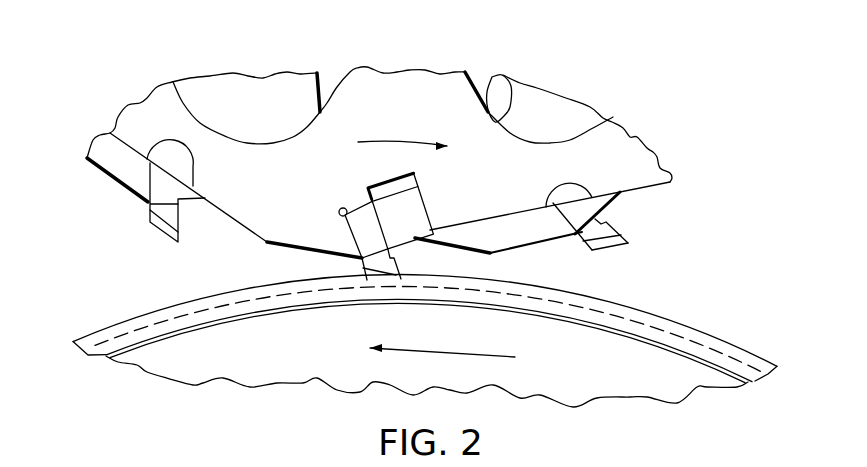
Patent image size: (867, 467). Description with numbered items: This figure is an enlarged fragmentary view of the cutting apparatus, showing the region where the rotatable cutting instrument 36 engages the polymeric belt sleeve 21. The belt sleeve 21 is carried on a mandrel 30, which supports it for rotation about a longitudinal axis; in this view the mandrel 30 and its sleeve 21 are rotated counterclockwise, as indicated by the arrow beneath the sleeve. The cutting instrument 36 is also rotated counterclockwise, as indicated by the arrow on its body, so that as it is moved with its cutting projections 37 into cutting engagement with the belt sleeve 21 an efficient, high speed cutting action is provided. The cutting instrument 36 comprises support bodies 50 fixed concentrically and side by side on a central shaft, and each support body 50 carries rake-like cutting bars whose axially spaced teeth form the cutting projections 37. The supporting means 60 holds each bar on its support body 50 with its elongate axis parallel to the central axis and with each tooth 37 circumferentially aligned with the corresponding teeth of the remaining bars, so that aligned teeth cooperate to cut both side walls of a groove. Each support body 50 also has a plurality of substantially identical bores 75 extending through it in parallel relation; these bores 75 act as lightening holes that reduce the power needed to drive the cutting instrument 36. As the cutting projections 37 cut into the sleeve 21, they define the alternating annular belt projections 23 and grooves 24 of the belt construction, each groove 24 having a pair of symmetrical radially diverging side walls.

The polymeric belt sleeve 21 is at (743, 348).
The annular belt projections 23 is at (683, 323).
The grooves 24 is at (623, 315).
The mandrel 30 is at (250, 373).
The rotatable cutting instrument 36 is at (632, 132).
The cutting projections 37 is at (163, 233).
The support bodies 50 is at (425, 80).
The supporting means 60 is at (427, 203).
The bores 75 is at (490, 90).